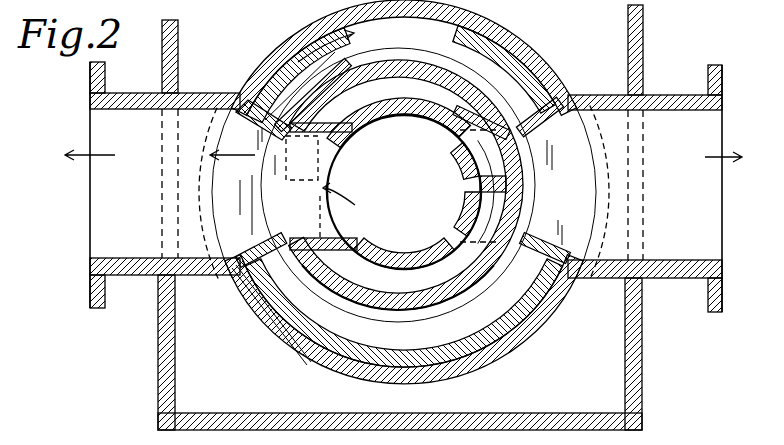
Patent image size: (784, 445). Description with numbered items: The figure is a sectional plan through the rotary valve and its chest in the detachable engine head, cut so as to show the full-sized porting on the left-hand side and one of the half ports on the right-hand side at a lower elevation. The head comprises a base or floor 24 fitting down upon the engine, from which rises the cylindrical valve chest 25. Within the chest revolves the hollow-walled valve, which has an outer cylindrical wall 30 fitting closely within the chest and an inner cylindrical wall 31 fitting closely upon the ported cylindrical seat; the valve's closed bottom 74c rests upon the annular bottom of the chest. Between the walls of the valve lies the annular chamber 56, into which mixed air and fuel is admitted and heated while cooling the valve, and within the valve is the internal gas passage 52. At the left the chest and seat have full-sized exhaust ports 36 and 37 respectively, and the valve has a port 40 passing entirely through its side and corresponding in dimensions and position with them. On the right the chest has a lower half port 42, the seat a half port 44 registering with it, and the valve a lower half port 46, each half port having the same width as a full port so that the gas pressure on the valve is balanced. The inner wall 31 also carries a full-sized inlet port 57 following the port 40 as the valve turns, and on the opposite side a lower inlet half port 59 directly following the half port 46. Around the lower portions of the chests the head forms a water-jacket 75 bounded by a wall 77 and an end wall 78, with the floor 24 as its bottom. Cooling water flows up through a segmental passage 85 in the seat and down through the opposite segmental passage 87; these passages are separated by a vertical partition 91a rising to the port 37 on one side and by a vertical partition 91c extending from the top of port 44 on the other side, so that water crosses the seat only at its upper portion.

The base or floor 24 is at (223, 382).
The cylindrical valve chest 25 is at (558, 298).
The outer cylindrical wall 30 is at (548, 78).
The inner cylindrical wall 31 is at (500, 108).
The exhaust port 36 is at (160, 185).
The exhaust port 37 is at (288, 140).
The port 40 is at (271, 246).
The lower half port 42 is at (655, 188).
The half port 44 is at (483, 128).
The lower half port 46 is at (578, 192).
The gas passage 52 is at (404, 192).
The annular chamber 56 is at (512, 74).
The inlet port 57 is at (398, 320).
The lower inlet half port 59 is at (428, 58).
The closed bottom 74c is at (496, 70).
The water-jacket 75 is at (640, 368).
The wall 77 is at (162, 388).
The end wall 78 is at (346, 414).
The segmental passage 85 is at (399, 114).
The segmental passage 87 is at (404, 265).
The vertical partition 91a is at (320, 188).
The vertical partition 91c is at (479, 190).